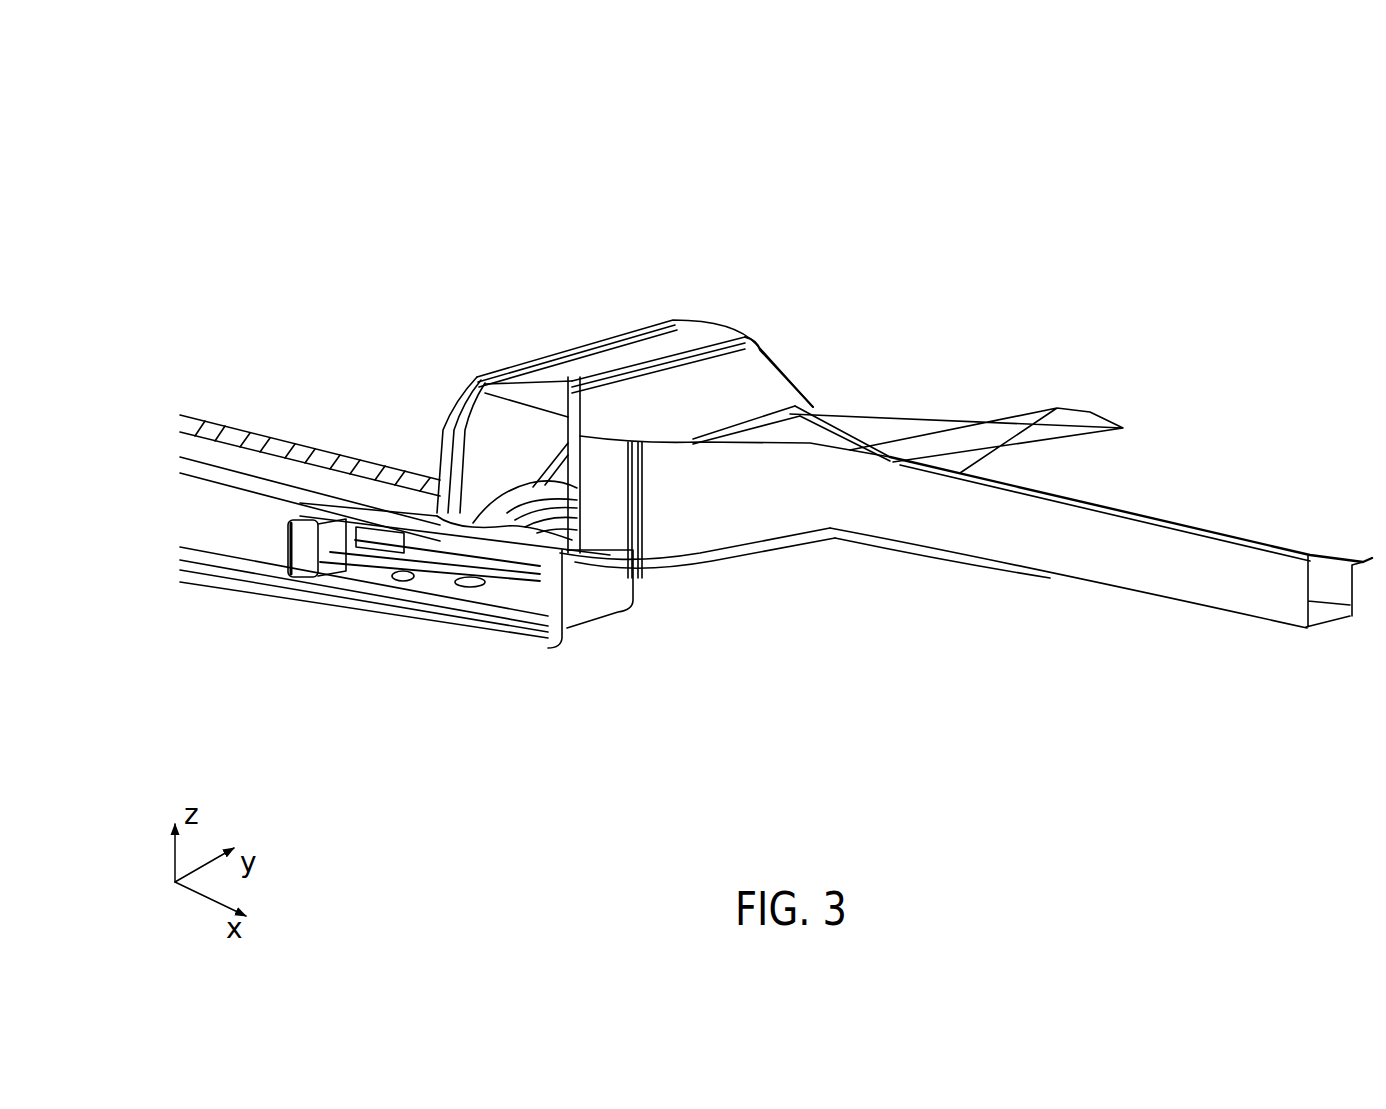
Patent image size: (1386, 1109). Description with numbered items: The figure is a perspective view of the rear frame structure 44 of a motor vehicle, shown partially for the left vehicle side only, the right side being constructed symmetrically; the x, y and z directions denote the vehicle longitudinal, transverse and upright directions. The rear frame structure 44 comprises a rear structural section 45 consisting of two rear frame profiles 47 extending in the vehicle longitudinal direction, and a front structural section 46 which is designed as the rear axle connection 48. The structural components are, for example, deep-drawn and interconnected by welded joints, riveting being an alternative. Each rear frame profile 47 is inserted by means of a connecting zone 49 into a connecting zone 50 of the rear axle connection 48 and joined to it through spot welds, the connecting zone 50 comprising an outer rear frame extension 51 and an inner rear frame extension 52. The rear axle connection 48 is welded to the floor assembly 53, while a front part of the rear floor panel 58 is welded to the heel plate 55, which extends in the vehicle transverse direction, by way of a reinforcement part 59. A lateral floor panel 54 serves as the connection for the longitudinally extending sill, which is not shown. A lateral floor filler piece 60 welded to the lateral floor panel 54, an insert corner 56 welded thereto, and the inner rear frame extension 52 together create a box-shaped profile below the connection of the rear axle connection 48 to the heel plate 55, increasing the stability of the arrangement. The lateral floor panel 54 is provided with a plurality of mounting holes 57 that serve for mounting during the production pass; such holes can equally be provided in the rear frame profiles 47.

The rear frame structure 44 is at (400, 205).
The rear structural section 45 is at (1133, 480).
The front structural section 46 is at (603, 343).
The rear frame profile 47 is at (1097, 563).
The rear axle connection 48 is at (617, 353).
The connecting zone 49 is at (967, 553).
The connecting zone 50 is at (932, 525).
The outer rear frame extension 51 is at (690, 517).
The inner rear frame extension 52 is at (587, 620).
The floor assembly 53 is at (357, 448).
The lateral floor panel 54 is at (245, 532).
The heel plate 55 is at (342, 560).
The insert corner 56 is at (630, 600).
The mounting holes 57 is at (467, 588).
The rear floor panel 58 is at (693, 343).
The reinforcement part 59 is at (360, 530).
The lateral floor filler piece 60 is at (547, 617).